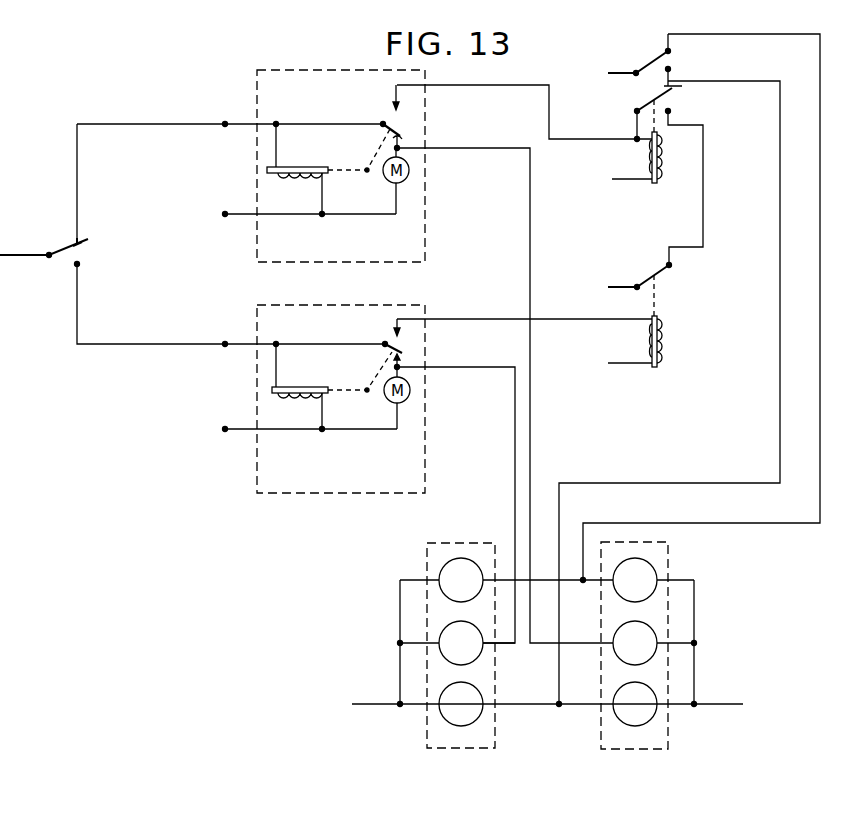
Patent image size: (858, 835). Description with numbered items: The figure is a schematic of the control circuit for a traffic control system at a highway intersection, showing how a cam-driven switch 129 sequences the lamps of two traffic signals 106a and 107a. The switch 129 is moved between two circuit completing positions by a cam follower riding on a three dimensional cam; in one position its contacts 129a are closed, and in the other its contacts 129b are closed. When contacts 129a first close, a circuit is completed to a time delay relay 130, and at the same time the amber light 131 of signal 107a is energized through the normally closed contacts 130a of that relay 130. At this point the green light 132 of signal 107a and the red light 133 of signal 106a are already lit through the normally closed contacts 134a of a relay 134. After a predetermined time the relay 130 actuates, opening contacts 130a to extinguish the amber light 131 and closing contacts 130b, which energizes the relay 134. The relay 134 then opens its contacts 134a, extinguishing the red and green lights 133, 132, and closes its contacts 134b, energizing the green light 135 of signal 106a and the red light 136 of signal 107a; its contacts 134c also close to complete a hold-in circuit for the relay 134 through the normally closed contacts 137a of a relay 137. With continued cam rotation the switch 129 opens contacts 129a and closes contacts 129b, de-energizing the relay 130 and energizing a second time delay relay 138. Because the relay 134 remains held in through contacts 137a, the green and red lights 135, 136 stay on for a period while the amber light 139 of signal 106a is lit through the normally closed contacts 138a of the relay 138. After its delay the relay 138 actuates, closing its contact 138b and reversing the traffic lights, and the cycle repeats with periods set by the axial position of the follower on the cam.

The switch 129 is at (68, 245).
The contacts of the switch 129a is at (80, 242).
The contacts of the switch 129b is at (77, 264).
The relay 130 is at (294, 167).
The normally closed contacts of relay 130 130a is at (403, 138).
The contacts of relay 130 130b is at (399, 110).
The second time delay relay 138 is at (291, 387).
The normally closed contacts of time delay relay 138 138a is at (402, 360).
The contact of relay 138 138b is at (400, 333).
The relay 134 is at (652, 161).
The normally closed contacts of relay 134 134a is at (672, 51).
The contacts of relay 134 134b is at (672, 70).
The contacts of relay 134 134c is at (672, 112).
The relay 137 is at (658, 343).
The normally closed contacts of relay 137 137a is at (672, 266).
The traffic signal 106a is at (427, 553).
The red light 133 is at (439, 576).
The amber light 139 is at (441, 635).
The green light 135 is at (441, 713).
The traffic signal 107a is at (668, 600).
The green light 132 is at (650, 573).
The amber light 131 is at (655, 650).
The red light 136 is at (655, 716).